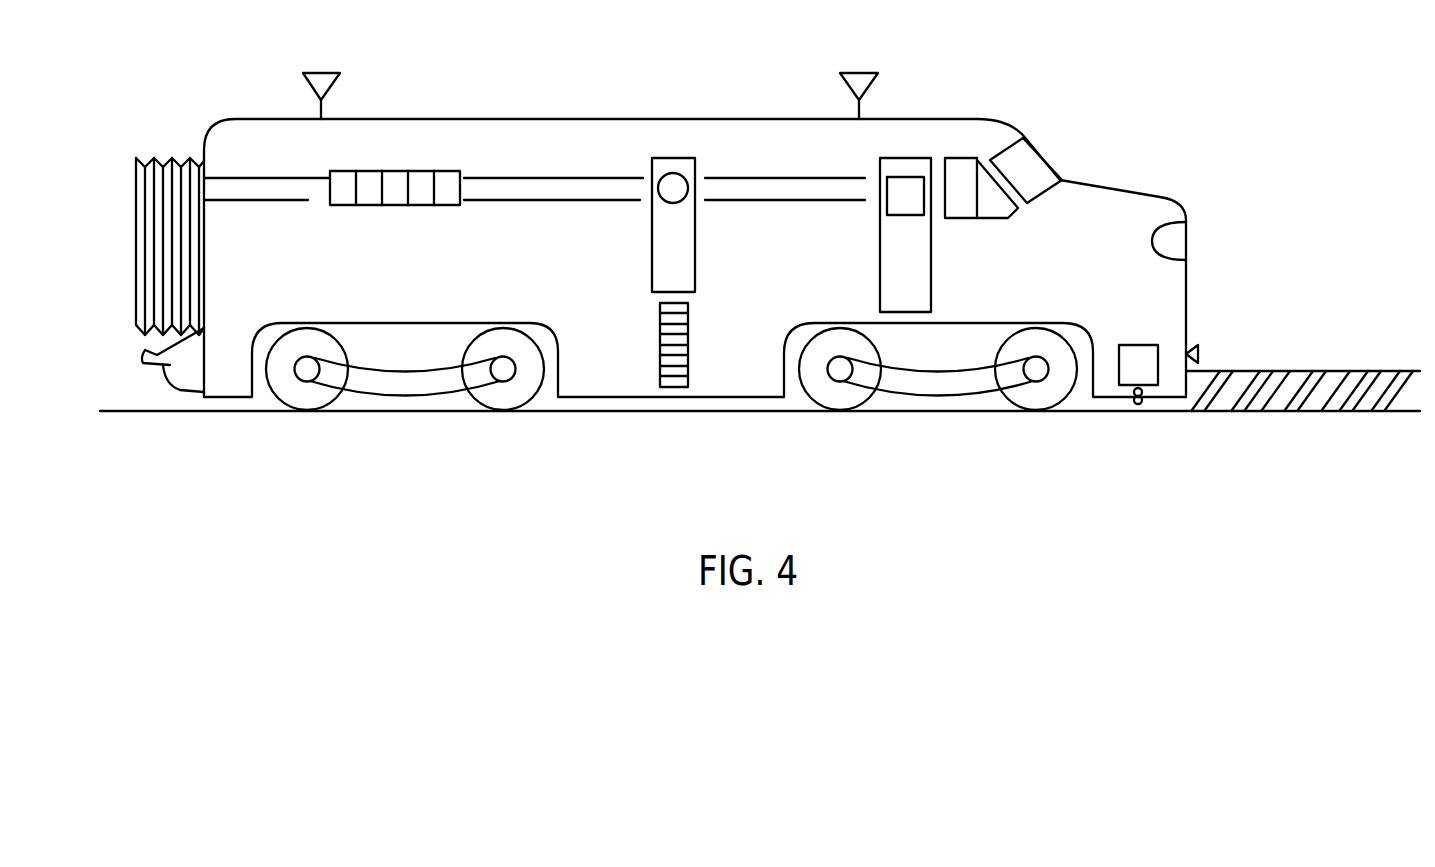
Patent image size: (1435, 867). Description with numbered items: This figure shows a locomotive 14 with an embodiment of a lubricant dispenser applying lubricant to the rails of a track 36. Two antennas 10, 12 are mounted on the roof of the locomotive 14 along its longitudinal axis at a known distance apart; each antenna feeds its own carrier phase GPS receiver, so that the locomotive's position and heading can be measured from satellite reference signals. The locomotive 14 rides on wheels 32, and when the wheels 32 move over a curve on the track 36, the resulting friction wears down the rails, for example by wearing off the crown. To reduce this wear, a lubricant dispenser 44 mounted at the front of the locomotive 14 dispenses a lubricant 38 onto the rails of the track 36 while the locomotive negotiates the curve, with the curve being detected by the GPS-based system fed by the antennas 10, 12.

The antenna 10 is at (869, 84).
The antenna 12 is at (333, 84).
The locomotive 14 is at (545, 230).
The wheels 32 is at (307, 400).
The track 36 is at (1305, 412).
The lubricant 38 is at (1138, 410).
The lubricant dispenser 44 is at (1138, 345).